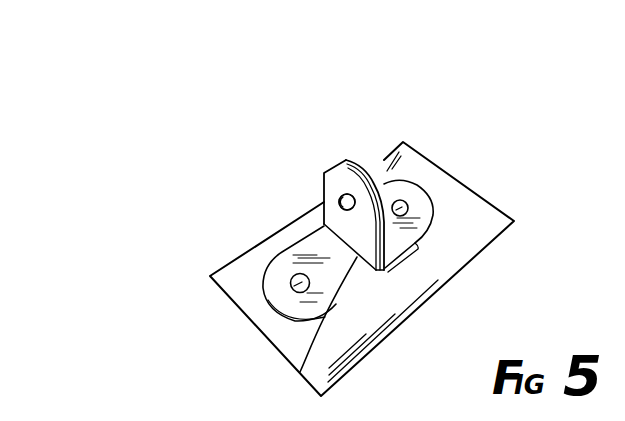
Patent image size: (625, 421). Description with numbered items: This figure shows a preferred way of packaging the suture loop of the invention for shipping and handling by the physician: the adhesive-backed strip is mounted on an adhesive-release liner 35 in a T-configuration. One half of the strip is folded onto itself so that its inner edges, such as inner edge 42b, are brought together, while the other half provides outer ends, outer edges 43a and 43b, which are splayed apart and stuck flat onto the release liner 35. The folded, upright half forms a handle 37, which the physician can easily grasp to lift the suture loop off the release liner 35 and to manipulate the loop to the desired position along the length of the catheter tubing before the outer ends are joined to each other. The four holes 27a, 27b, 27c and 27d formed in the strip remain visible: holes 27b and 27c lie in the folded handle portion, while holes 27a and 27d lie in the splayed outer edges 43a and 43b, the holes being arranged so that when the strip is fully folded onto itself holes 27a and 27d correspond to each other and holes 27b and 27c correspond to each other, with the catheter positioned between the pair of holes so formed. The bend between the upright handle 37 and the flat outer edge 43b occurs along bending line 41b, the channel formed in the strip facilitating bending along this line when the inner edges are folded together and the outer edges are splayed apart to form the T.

The adhesive-release liner 35 is at (337, 375).
The handle 37 is at (341, 163).
The inner edge 42b is at (332, 182).
The outer edge 43a is at (420, 217).
The outer edge 43b is at (304, 253).
The hole 27a is at (402, 206).
The hole 27b is at (349, 201).
The hole 27c is at (347, 202).
The hole 27d is at (297, 285).
The bending line 41b is at (300, 373).